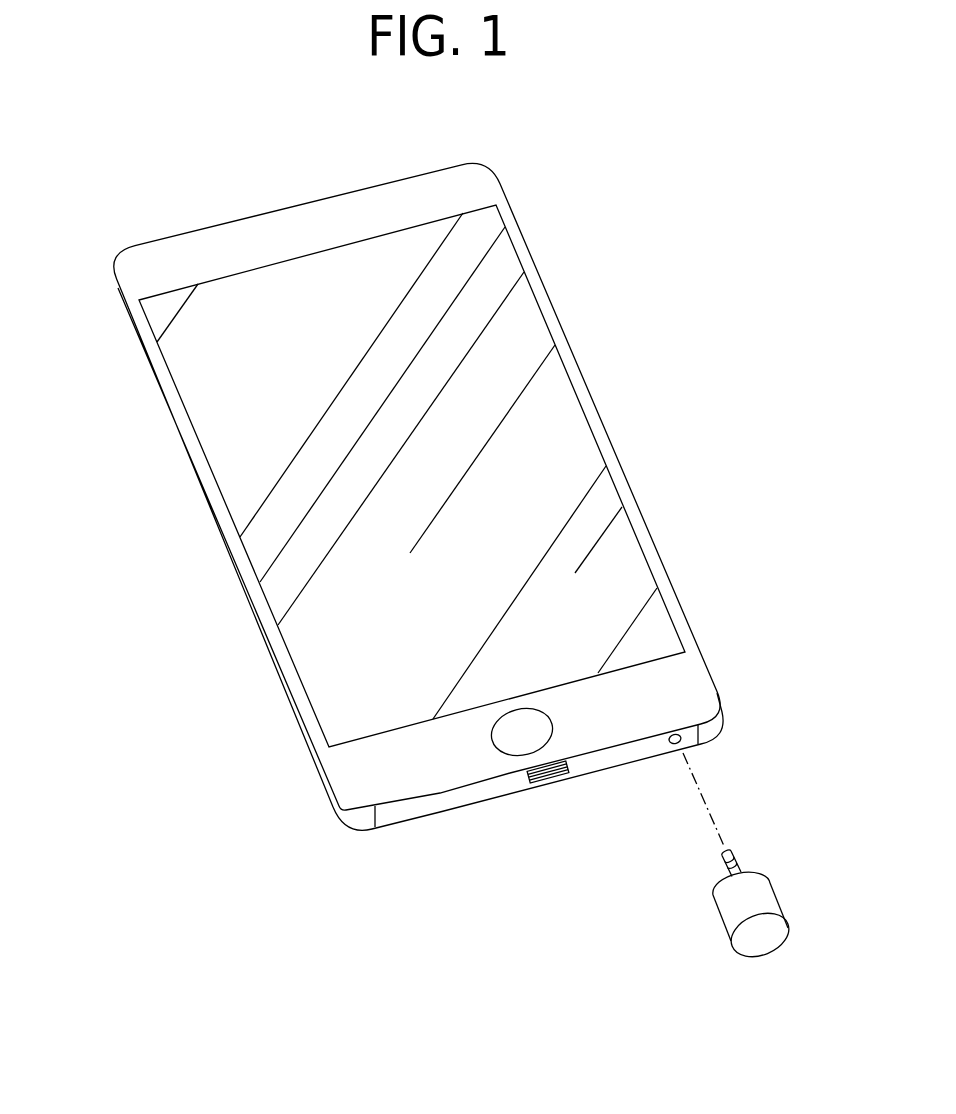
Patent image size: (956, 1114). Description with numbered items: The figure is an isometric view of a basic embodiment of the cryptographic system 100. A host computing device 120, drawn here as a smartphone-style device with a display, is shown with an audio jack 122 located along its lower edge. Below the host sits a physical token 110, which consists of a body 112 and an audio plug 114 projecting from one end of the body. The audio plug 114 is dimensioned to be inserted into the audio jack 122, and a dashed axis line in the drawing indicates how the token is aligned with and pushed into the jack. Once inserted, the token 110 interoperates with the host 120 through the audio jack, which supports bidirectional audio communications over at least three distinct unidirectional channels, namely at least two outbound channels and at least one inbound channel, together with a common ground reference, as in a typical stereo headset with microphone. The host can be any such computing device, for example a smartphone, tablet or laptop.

The cryptographic system 100 is at (141, 95).
The physical token 110 is at (723, 928).
The body 112 is at (775, 902).
The audio plug 114 is at (718, 862).
The computing device 120 is at (167, 420).
The audio jack 122 is at (685, 743).